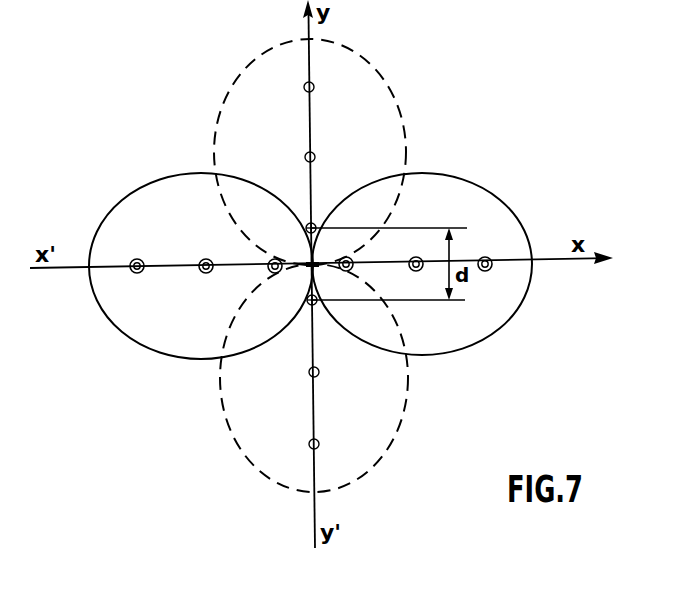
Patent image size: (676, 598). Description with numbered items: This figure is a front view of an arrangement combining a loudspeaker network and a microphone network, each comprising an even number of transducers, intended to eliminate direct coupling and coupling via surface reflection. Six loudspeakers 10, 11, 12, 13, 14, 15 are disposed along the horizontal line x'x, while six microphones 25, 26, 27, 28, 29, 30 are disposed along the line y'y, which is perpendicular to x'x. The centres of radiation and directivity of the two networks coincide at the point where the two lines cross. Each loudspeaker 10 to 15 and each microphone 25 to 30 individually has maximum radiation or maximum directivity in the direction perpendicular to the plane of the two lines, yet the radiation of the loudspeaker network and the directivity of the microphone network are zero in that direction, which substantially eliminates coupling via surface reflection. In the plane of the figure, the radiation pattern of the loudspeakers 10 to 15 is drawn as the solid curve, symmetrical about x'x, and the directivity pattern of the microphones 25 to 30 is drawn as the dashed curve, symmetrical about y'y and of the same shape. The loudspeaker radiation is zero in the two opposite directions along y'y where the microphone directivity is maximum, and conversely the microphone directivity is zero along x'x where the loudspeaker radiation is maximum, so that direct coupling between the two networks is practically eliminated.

The loudspeaker 10 is at (136, 259).
The loudspeaker 11 is at (204, 259).
The loudspeaker 12 is at (275, 258).
The loudspeaker 13 is at (354, 262).
The loudspeaker 14 is at (416, 257).
The loudspeaker 15 is at (497, 235).
The microphone 25 is at (309, 446).
The microphone 26 is at (309, 373).
The microphone 27 is at (310, 306).
The microphone 28 is at (307, 222).
The microphone 29 is at (306, 154).
The microphone 30 is at (304, 87).